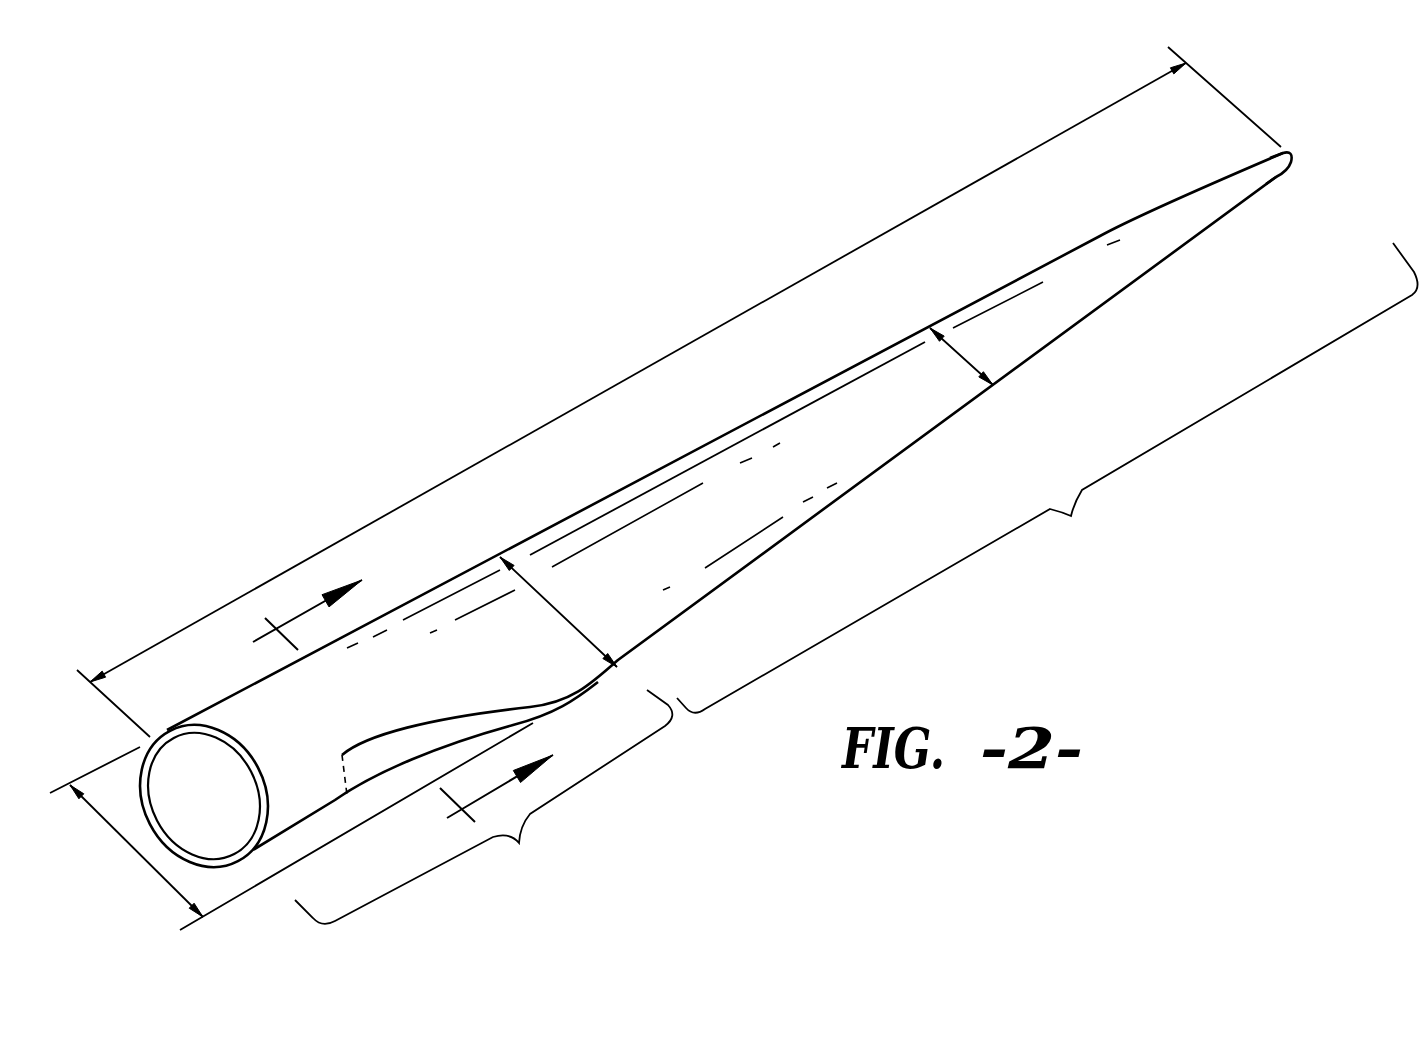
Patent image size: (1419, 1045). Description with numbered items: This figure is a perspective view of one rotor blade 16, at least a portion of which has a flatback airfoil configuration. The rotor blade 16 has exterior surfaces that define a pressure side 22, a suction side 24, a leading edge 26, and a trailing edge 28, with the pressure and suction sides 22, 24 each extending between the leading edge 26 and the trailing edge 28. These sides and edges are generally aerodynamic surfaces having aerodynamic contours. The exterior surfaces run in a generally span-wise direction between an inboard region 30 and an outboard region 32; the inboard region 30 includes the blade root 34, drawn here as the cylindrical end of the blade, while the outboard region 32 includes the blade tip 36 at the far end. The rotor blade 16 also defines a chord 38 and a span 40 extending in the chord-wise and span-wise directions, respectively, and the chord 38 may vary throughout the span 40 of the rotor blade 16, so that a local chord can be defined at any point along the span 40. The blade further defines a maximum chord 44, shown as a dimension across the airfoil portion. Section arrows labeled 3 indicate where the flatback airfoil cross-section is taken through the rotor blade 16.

The rotor blade 16 is at (761, 513).
The pressure side 22 is at (887, 393).
The suction side 24 is at (850, 436).
The leading edge 26 is at (705, 446).
The trailing edge 28 is at (763, 550).
The inboard region 30 is at (483, 807).
The outboard region 32 is at (1047, 478).
The blade root 34 is at (160, 728).
The blade tip 36 is at (1301, 147).
The chord 38 is at (130, 853).
The span 40 is at (675, 350).
The maximum chord 44 is at (555, 602).
The section line 3- 3 is at (421, 686).